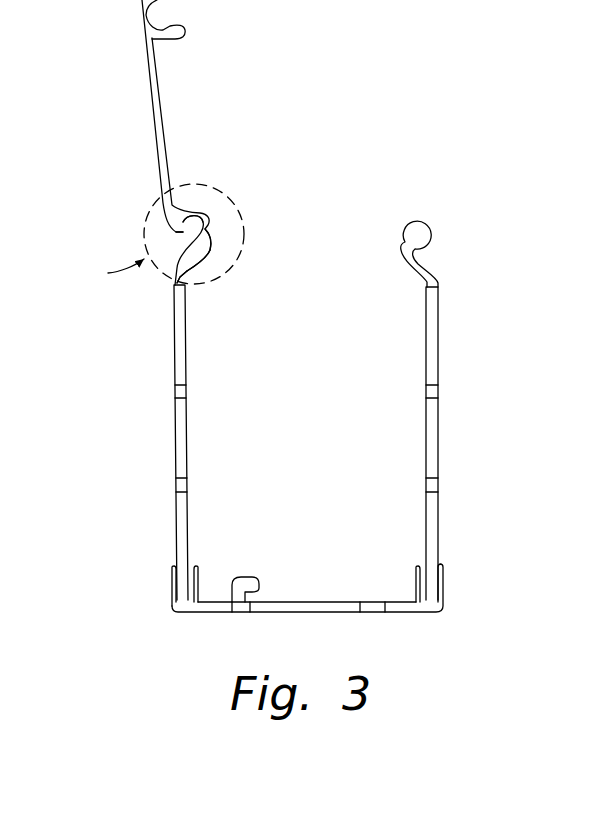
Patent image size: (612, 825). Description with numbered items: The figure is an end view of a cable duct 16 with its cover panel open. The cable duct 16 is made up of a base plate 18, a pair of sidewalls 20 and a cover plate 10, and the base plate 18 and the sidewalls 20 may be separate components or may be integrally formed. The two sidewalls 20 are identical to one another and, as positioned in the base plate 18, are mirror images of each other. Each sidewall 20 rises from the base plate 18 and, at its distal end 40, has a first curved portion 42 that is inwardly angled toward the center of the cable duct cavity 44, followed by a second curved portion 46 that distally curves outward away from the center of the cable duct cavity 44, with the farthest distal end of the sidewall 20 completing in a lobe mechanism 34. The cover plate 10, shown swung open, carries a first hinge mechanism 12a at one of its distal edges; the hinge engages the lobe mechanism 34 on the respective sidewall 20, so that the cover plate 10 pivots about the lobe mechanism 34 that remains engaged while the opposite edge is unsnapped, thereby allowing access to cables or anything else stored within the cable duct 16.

The cover plate 10 is at (152, 112).
The first hinge mechanism 12a is at (157, 233).
The cable duct 16 is at (373, 185).
The base plate 18 is at (348, 612).
The sidewall 20 is at (187, 412).
The lobe mechanism 34 is at (200, 230).
The distal end 40 is at (166, 289).
The first curved portion 42 is at (198, 275).
The cable duct cavity 44 is at (280, 365).
The second curved portion 46 is at (198, 247).